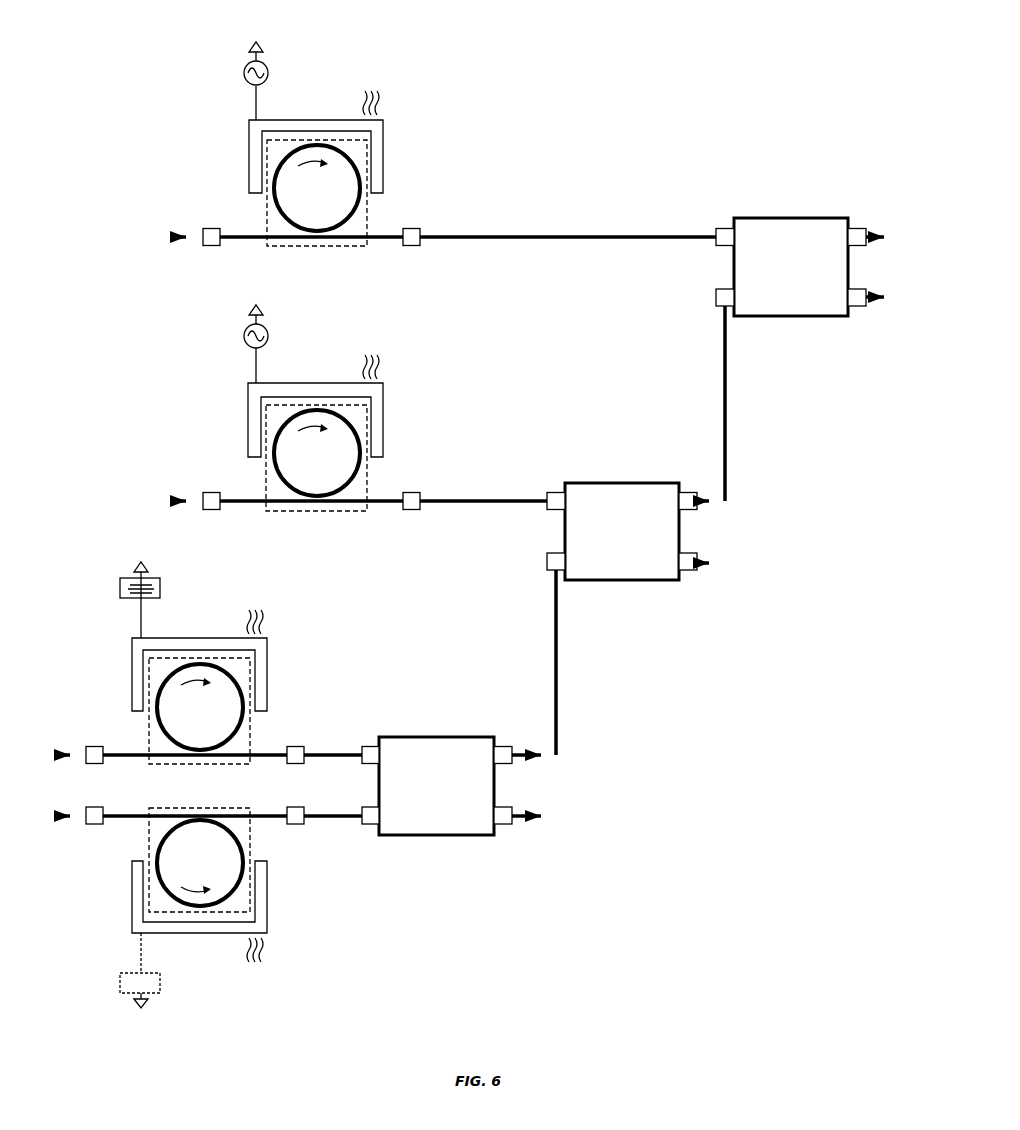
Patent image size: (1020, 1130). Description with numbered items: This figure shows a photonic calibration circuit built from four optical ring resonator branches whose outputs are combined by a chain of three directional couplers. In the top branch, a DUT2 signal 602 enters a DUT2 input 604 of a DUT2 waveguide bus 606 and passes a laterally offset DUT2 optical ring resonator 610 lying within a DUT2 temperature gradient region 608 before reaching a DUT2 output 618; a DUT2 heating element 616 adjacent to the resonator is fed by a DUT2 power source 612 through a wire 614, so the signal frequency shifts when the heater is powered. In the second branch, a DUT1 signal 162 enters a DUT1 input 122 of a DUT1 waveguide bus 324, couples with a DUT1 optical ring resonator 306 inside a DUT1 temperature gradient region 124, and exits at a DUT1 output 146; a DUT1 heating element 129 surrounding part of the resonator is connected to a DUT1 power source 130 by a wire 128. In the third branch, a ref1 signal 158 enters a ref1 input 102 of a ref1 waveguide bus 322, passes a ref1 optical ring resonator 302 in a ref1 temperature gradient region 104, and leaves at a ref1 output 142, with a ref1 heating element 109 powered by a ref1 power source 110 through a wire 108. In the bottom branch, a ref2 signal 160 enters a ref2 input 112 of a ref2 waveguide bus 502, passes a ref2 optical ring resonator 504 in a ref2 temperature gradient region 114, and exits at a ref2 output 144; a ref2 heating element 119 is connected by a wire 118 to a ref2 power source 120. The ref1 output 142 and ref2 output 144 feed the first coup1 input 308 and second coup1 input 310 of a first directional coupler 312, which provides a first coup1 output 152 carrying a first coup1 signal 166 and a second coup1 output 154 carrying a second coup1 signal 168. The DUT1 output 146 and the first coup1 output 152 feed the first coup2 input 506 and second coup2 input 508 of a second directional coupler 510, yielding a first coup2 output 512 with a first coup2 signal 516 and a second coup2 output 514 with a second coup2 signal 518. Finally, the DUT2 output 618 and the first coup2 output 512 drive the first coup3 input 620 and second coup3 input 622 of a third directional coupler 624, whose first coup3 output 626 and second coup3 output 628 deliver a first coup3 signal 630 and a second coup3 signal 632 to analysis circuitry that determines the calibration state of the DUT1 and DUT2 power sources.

The DUT2 signal 602 is at (172, 237).
The DUT2 input 604 is at (206, 228).
The DUT2 waveguide bus 606 is at (250, 240).
The DUT2 temperature gradient region 608 is at (267, 216).
The DUT2 optical ring resonator 610 is at (358, 195).
The DUT2 power source 612 is at (247, 68).
The wire 614 is at (256, 101).
The DUT2 heating element 616 is at (249, 131).
The DUT2 output 618 is at (421, 243).
The first coup3 input 620 is at (718, 230).
The second coup3 input 622 is at (718, 305).
The third directional coupler 624 is at (798, 218).
The first coup3 output 626 is at (864, 230).
The second coup3 output 628 is at (864, 306).
The first coup3 signal 630 is at (896, 240).
The second coup3 signal 632 is at (897, 295).
The DUT1 signal 162 is at (172, 501).
The DUT1 input 122 is at (206, 493).
The DUT1 waveguide bus 324 is at (250, 505).
The DUT1 temperature gradient region 124 is at (266, 481).
The DUT1 optical ring resonator 306 is at (358, 460).
The DUT1 power source 130 is at (247, 331).
The wire 128 is at (256, 366).
The DUT1 heating element 129 is at (248, 395).
The DUT1 output 146 is at (421, 507).
The first coup2 input 506 is at (550, 493).
The second coup2 input 508 is at (550, 571).
The second directional coupler 510 is at (630, 483).
The first coup2 output 512 is at (683, 493).
The second coup2 output 514 is at (683, 571).
The first coup2 signal 516 is at (722, 505).
The second coup2 signal 518 is at (722, 558).
The ref1 signal 158 is at (55, 755).
The ref1 input 102 is at (90, 747).
The ref1 waveguide bus 322 is at (128, 760).
The ref1 temperature gradient region 104 is at (149, 735).
The ref1 optical ring resonator 302 is at (243, 715).
The ref1 power source 110 is at (120, 580).
The wire 108 is at (141, 619).
The ref1 heating element 109 is at (132, 650).
The ref1 output 142 is at (305, 762).
The first coup1 input 308 is at (367, 747).
The second coup1 input 310 is at (367, 825).
The first directional coupler 312 is at (443, 737).
The first coup1 output 152 is at (511, 747).
The second coup1 output 154 is at (511, 825).
The first coup1 signal 166 is at (553, 760).
The second coup1 signal 168 is at (553, 820).
The ref2 output 144 is at (305, 810).
The ref2 signal 160 is at (55, 818).
The ref2 input 112 is at (90, 826).
The ref2 waveguide bus 502 is at (128, 812).
The ref2 temperature gradient region 114 is at (149, 838).
The ref2 optical ring resonator 504 is at (243, 860).
The ref2 heating element 119 is at (132, 925).
The wire 118 is at (141, 952).
The ref2 power source 120 is at (120, 993).